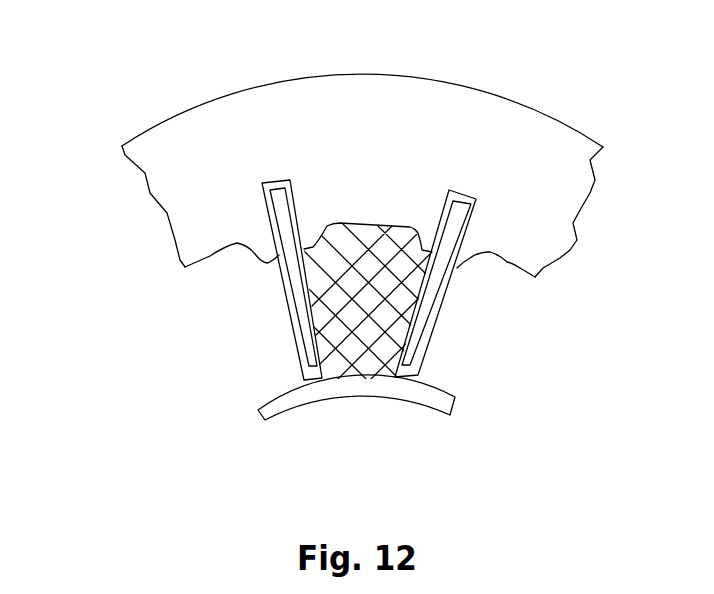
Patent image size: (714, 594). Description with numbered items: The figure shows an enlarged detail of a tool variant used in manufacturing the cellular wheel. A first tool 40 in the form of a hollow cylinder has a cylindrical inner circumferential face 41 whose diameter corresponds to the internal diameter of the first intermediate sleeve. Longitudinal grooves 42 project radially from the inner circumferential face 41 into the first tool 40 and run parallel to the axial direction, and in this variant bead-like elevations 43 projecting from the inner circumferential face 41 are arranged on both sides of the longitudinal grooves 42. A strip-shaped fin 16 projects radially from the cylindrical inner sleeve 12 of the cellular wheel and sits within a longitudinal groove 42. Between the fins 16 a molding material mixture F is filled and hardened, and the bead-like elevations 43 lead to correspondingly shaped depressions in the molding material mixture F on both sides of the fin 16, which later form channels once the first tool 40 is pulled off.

The first tool 40 is at (245, 160).
The inner circumferential face 41 is at (503, 266).
The longitudinal grooves 42 is at (278, 177).
The bead-like elevations 43 is at (268, 246).
The fins 16 is at (424, 307).
The molding material mixture F is at (346, 294).
The inner sleeve 12 is at (347, 388).